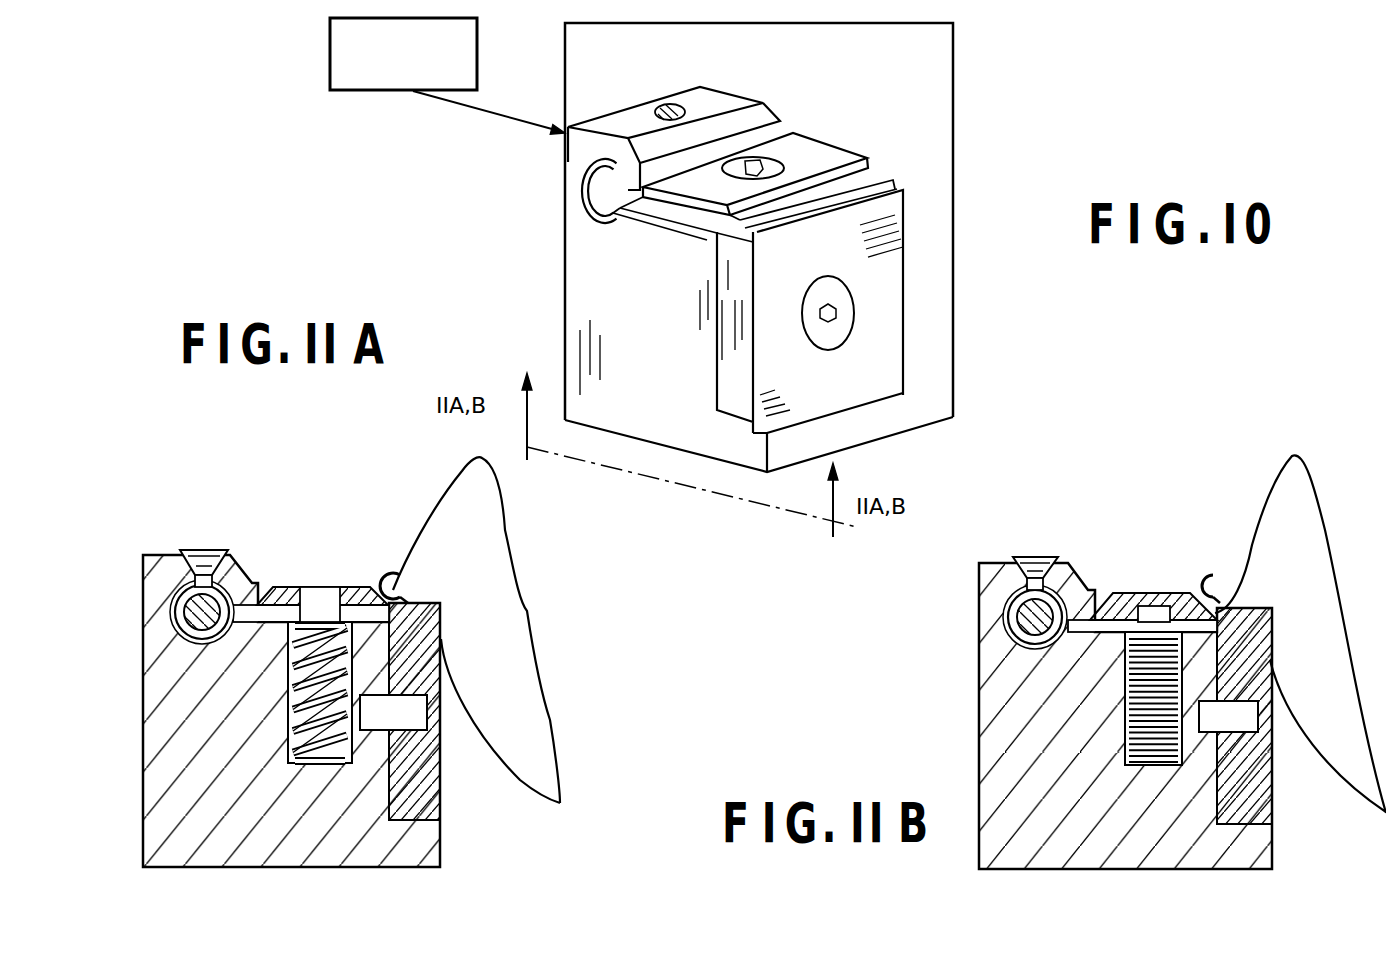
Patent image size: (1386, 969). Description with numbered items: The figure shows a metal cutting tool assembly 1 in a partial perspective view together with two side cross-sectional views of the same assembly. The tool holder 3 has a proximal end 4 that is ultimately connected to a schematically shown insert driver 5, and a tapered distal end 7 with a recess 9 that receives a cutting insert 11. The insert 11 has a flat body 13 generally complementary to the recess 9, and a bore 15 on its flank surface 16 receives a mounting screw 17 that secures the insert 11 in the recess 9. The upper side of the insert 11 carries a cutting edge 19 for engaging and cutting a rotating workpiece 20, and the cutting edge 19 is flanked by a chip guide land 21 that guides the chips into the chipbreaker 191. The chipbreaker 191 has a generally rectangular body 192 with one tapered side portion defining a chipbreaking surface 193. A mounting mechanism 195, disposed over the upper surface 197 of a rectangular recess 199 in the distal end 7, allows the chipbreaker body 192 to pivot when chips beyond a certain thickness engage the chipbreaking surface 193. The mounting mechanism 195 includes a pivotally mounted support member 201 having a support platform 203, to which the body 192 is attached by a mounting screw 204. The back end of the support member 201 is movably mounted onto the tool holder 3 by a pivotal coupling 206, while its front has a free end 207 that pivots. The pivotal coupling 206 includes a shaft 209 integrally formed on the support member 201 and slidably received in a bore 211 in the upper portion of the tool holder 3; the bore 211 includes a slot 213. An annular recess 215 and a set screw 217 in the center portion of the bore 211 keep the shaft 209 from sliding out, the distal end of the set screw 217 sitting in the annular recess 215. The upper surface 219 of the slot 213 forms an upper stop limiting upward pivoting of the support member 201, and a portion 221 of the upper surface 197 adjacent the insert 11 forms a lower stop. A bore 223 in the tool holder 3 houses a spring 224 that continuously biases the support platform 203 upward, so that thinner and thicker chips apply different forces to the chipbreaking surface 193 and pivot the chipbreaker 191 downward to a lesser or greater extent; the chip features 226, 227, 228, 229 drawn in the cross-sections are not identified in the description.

In FIG. 10, the metal cutting tool assembly 1 is at (980, 100).
In FIG. 10, the tool holder 3 is at (780, 63).
In FIG. 10, the proximal end 4 is at (565, 77).
In FIG. 10, the insert driver 5 is at (330, 68).
In FIG. 10, the distal end 7 is at (645, 425).
In FIG. 11A, the recess 9 is at (440, 802).
In FIG. 11B, the recess 9 is at (1268, 813).
In FIG. 10, the cutting insert 11 is at (835, 255).
In FIG. 10, the flat body 13 is at (737, 420).
In FIG. 11A, the bore 15 is at (440, 760).
In FIG. 11B, the bore 15 is at (1266, 768).
In FIG. 10, the flank surface 16 is at (848, 396).
In FIG. 10, the mounting screw 17 is at (835, 325).
In FIG. 10, the cutting edge 19 is at (900, 180).
In FIG. 11A, the rotating workpiece 20 is at (528, 730).
In FIG. 10, the chip guide land 21 is at (690, 248).
In FIG. 10, the chipbreaker 191 is at (797, 154).
In FIG. 10, the rectangular body 192 is at (823, 155).
In FIG. 10, the chipbreaking surface 193 is at (880, 165).
In FIG. 11A, the mounting mechanism 195 is at (178, 504).
In FIG. 11B, the mounting mechanism 195 is at (1020, 528).
In FIG. 10, the upper surface 197 is at (648, 230).
In FIG. 10, the rectangular recess 199 is at (645, 240).
In FIG. 10, the support member 201 is at (640, 207).
In FIG. 11A, the support member 201 is at (210, 662).
In FIG. 11B, the support member 201 is at (1050, 680).
In FIG. 11A, the support platform 203 is at (275, 622).
In FIG. 11B, the support platform 203 is at (1105, 632).
In FIG. 11A, the mounting screw 204 is at (305, 590).
In FIG. 11B, the mounting screw 204 is at (1150, 595).
In FIG. 10, the pivotal coupling 206 is at (600, 182).
In FIG. 10, the free end 207 is at (710, 252).
In FIG. 11A, the free end 207 is at (440, 632).
In FIG. 11B, the free end 207 is at (1236, 638).
In FIG. 10, the shaft 209 is at (620, 201).
In FIG. 11A, the shaft 209 is at (175, 640).
In FIG. 11B, the shaft 209 is at (1010, 633).
In FIG. 11A, the bore 211 is at (175, 612).
In FIG. 11B, the bore 211 is at (1010, 611).
In FIG. 11A, the slot 213 is at (190, 648).
In FIG. 11B, the slot 213 is at (1050, 660).
In FIG. 11A, the annular recess 215 is at (228, 550).
In FIG. 11B, the annular recess 215 is at (1057, 557).
In FIG. 11A, the set screw 217 is at (175, 550).
In FIG. 11B, the set screw 217 is at (983, 553).
In FIG. 11A, the upper surface 219 is at (258, 605).
In FIG. 11B, the upper surface 219 is at (1090, 603).
In FIG. 11A, the portion 221 is at (440, 656).
In FIG. 11B, the portion 221 is at (1215, 656).
In FIG. 11A, the bore 223 is at (293, 743).
In FIG. 11B, the bore 223 is at (1128, 762).
In FIG. 11A, the spring 224 is at (305, 762).
In FIG. 11B, the spring 224 is at (1150, 765).
In FIG. 11A, the chip curl 226 is at (380, 568).
In FIG. 11A, the chip edge 227 is at (398, 590).
In FIG. 11B, the chip curl 228 is at (1210, 565).
In FIG. 11B, the chip edge 229 is at (1190, 570).